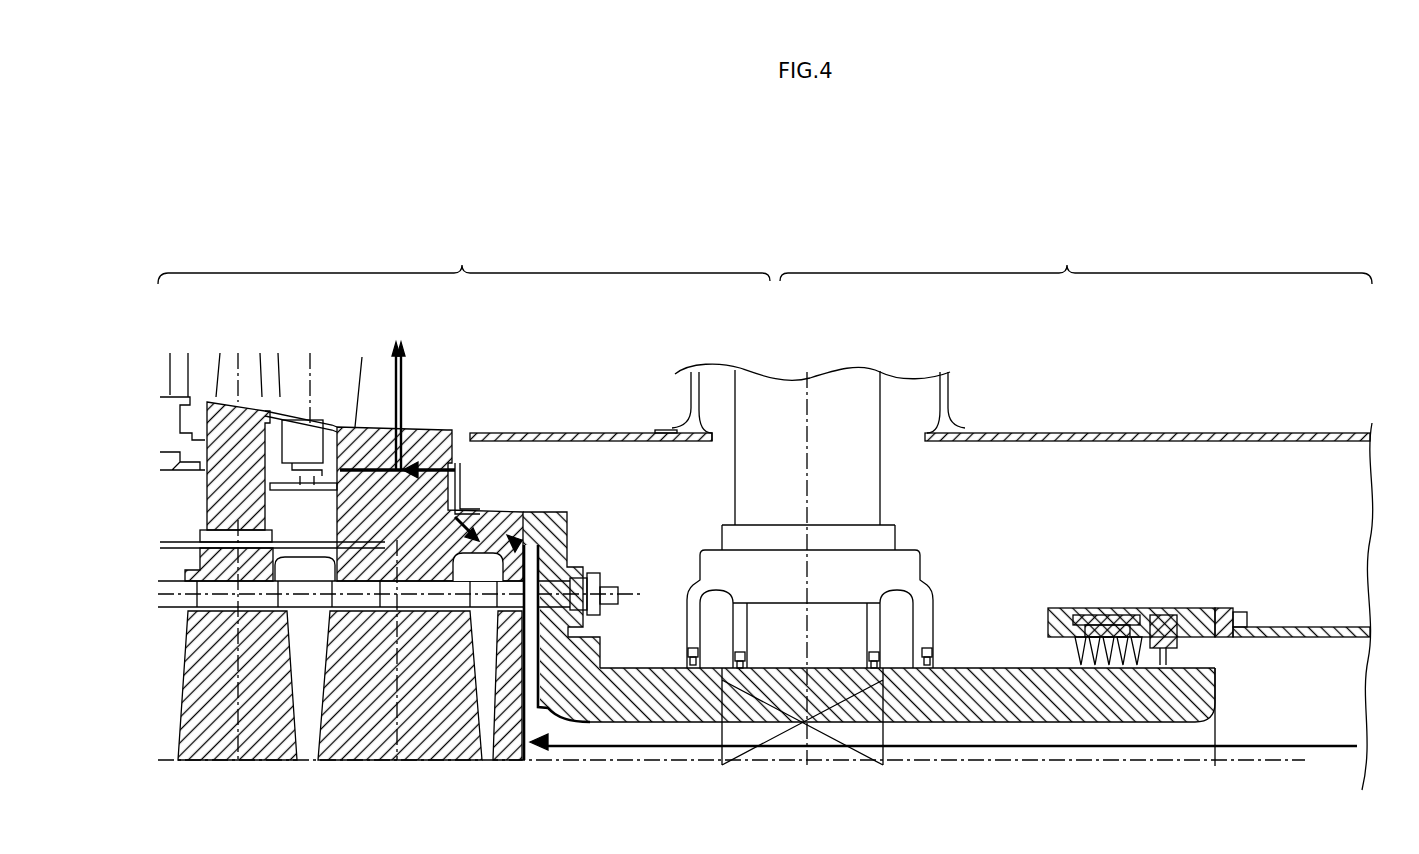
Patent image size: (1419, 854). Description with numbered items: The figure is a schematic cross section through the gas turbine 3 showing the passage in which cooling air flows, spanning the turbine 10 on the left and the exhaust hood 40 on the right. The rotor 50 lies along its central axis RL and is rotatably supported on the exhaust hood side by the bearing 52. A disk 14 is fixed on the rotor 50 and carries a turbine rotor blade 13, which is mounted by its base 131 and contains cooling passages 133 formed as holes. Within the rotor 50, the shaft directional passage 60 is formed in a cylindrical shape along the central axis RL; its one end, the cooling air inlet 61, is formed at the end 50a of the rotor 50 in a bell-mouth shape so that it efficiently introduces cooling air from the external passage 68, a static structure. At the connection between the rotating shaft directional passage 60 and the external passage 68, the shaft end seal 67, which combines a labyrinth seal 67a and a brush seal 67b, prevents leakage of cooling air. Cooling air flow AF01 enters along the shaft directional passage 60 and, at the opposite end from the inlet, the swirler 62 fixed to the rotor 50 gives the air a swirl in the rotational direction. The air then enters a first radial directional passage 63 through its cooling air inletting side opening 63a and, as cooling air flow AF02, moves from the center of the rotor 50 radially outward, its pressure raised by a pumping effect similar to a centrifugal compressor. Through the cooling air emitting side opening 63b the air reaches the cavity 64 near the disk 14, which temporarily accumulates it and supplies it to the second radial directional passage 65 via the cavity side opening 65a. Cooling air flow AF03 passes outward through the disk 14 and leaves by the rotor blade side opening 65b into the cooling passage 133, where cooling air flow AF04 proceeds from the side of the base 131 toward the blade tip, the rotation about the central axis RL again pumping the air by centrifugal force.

The gas turbine 3 is at (1205, 244).
The turbine 10 is at (464, 258).
The exhaust hood 40 is at (1076, 258).
The turbine rotor blades 13 is at (442, 428).
The disks 14 is at (452, 752).
The rotor 50 is at (890, 668).
The end of the rotor 50a is at (1218, 680).
The bearing 52 is at (823, 638).
The shaft directional passage 60 is at (897, 762).
The cooling air inlet 61 is at (1210, 722).
The swirler 62 is at (512, 752).
The first radial directional passage 63 is at (522, 655).
The cooling air inletting side opening 63a is at (568, 725).
The cooling air emitting side opening 63b is at (557, 517).
The cavity 64 is at (490, 530).
The second radial directional passage 65 is at (567, 443).
The cavity side opening 65a is at (490, 528).
The rotor blade side opening 65b is at (552, 432).
The shaft end seal 67 is at (1200, 608).
The labyrinth seal 67a is at (1108, 608).
The brush seal 67b is at (1165, 608).
The external passage 68 is at (1298, 627).
The base 131 is at (338, 423).
The cooling passages 133 is at (455, 462).
The cooling air flow AF01 is at (1040, 748).
The cooling air flow AF02 is at (612, 744).
The cooling air flow AF03 is at (460, 500).
The cooling air flow AF04 is at (400, 397).
The central axis RL is at (752, 773).